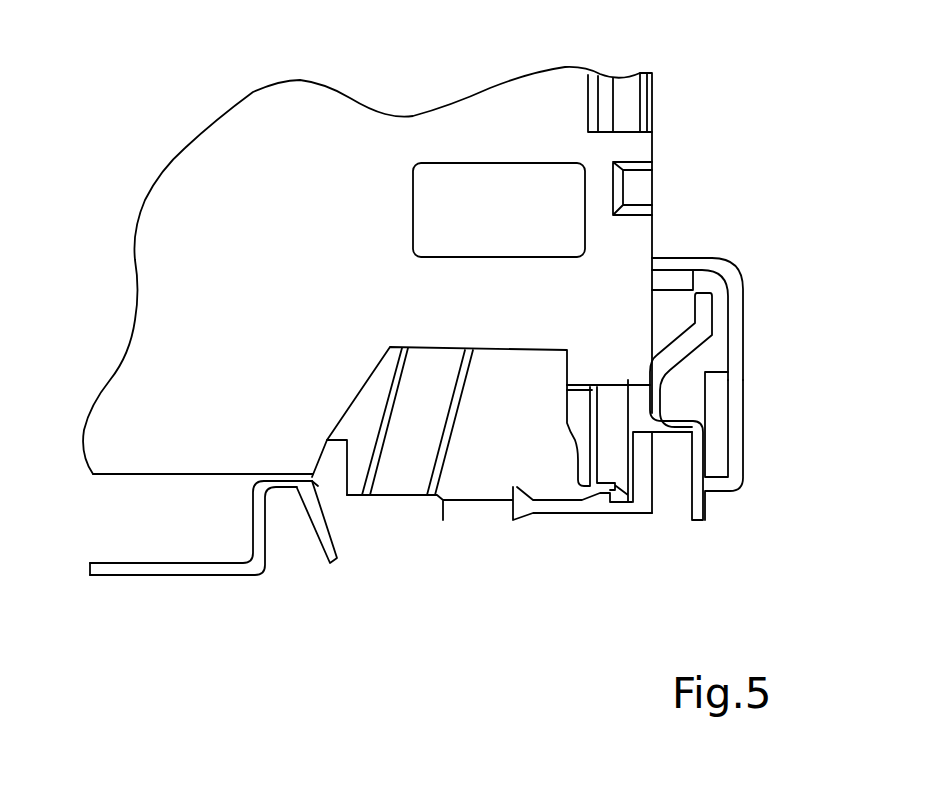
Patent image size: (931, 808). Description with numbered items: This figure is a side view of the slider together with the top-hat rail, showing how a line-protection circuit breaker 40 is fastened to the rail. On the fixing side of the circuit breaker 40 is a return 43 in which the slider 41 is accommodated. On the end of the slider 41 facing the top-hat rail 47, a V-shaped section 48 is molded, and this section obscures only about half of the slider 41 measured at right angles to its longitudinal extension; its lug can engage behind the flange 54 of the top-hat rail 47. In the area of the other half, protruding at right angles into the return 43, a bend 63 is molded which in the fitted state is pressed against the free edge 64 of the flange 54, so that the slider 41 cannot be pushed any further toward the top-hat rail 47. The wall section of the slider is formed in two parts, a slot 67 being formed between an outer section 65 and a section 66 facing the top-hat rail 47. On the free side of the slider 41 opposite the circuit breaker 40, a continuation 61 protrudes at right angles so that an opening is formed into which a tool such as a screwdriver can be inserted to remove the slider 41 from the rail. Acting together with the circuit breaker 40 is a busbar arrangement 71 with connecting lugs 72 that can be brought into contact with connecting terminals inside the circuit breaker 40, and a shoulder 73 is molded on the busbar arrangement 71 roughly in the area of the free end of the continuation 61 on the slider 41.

The line-protection circuit breaker 40 is at (253, 248).
The slider 41 is at (378, 498).
The return 43 is at (440, 372).
The top-hat rail 47 is at (223, 570).
The V-shaped section 48 is at (330, 563).
The flange 54 is at (270, 481).
The continuation 61 is at (643, 495).
The bend 63 is at (332, 463).
The free edge 64 is at (312, 477).
The outer section 65 is at (615, 412).
The section facing the top-hat rail 66 is at (578, 417).
The slot 67 is at (600, 383).
The busbar arrangement 71 is at (715, 485).
The connecting lugs 72 is at (680, 260).
The shoulder 73 is at (672, 435).